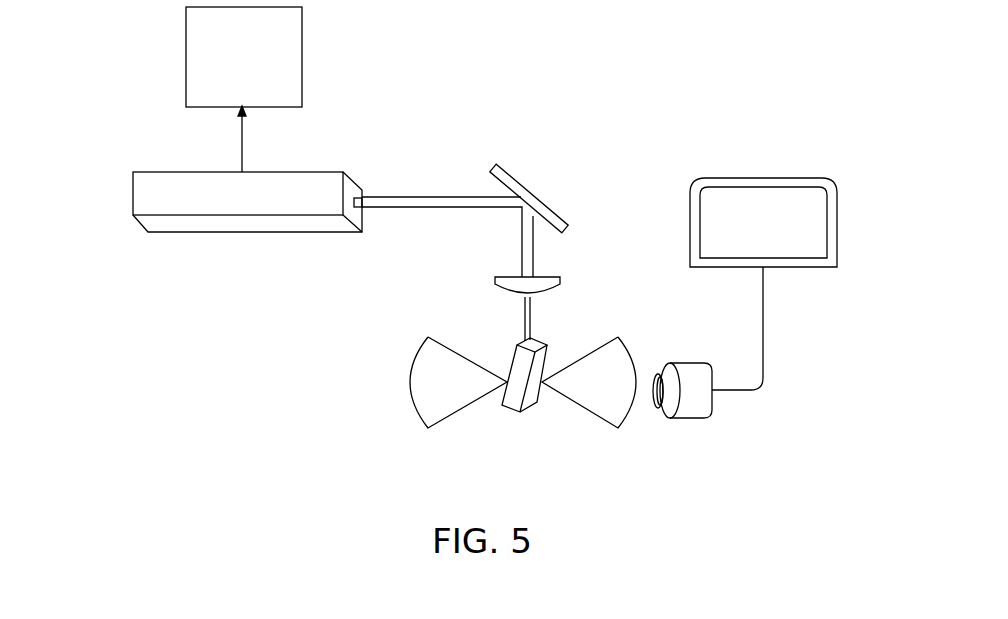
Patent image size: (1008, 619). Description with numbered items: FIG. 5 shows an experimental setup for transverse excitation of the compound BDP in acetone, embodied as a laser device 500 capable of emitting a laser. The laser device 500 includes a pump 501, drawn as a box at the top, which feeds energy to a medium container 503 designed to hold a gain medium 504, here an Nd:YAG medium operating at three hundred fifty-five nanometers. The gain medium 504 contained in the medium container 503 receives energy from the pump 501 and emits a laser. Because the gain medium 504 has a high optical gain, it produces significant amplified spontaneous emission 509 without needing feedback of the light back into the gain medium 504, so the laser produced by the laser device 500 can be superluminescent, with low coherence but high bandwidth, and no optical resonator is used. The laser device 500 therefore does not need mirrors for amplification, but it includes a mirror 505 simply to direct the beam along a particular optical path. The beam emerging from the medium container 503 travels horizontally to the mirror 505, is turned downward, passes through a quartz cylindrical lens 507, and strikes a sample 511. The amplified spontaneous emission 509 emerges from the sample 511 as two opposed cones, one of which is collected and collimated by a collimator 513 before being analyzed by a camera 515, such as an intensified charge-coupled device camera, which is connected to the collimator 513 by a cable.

The laser device 500 is at (675, 50).
The pump 501 is at (186, 51).
The medium container 503 is at (133, 190).
The gain medium 504 is at (183, 206).
The mirror 505 is at (503, 172).
The quartz cylindrical lens 507 is at (560, 278).
The amplified spontaneous emission (ASE) 509 is at (410, 405).
The sample 511 is at (547, 362).
The collimator 513 is at (692, 363).
The camera 515 is at (837, 227).